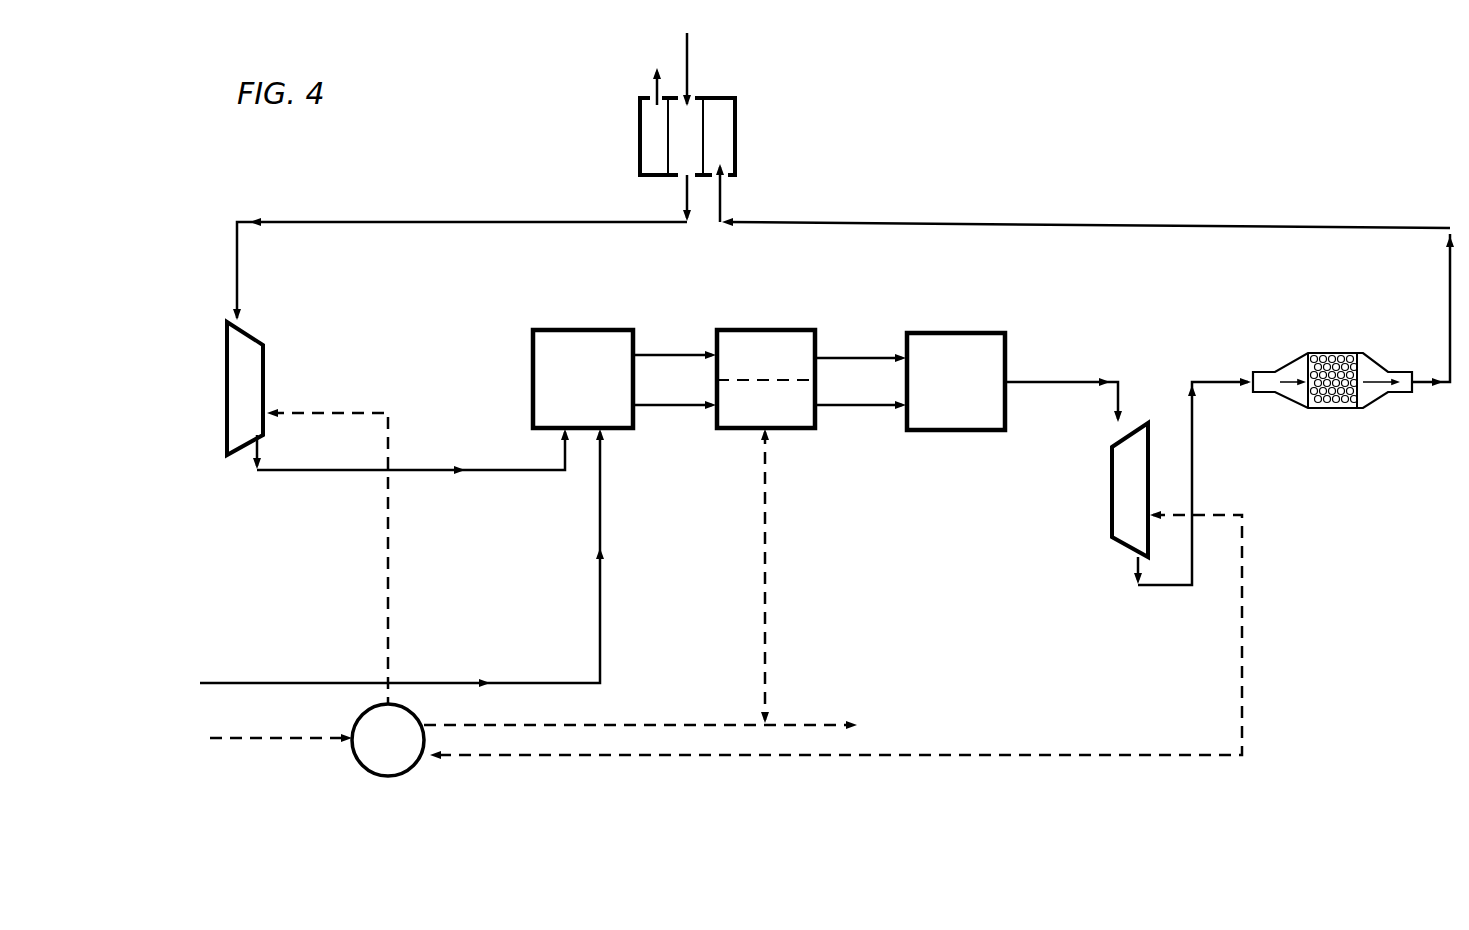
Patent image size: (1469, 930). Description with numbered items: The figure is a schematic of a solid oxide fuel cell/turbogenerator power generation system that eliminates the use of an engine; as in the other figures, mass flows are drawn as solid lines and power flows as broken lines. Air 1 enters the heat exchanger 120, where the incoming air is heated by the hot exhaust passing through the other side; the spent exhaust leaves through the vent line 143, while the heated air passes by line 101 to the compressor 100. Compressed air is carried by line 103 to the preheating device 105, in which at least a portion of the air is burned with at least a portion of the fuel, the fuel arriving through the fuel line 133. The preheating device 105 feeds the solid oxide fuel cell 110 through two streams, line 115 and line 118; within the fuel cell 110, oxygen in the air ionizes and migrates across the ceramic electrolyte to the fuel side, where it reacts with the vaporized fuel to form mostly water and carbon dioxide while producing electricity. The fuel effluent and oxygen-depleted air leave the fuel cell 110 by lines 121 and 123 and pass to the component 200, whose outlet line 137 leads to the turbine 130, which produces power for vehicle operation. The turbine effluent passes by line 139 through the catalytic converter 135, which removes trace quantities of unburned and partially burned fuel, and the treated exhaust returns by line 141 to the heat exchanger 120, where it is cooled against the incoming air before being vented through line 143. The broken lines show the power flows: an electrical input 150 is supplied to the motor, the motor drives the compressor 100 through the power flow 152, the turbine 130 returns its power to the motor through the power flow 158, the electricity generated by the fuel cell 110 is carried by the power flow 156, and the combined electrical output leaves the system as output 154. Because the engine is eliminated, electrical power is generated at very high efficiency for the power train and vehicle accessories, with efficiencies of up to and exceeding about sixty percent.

The air 1 is at (687, 43).
The compressor 100 is at (263, 373).
The compressor inlet line 101 is at (684, 207).
The compressed air line 103 is at (520, 470).
The preheating device 105 is at (583, 379).
The solid oxide fuel cell 110 is at (737, 432).
The second heat exchanger 115 is at (657, 355).
The air supply line 118 is at (675, 405).
The heat exchanger 120 is at (640, 130).
The anode exhaust line 121 is at (840, 356).
The cathode exhaust line 123 is at (845, 405).
The turbine 130 is at (1112, 493).
The fuel supply line 133 is at (600, 515).
The catalytic converter 135 is at (1330, 353).
The combustor exhaust line 137 is at (1045, 382).
The turbine exhaust line 139 is at (1192, 455).
The heat exchanger return line 141 is at (907, 223).
The exhaust outlet 143 is at (650, 84).
The electrical input line 150 is at (263, 738).
The motor-compressor coupling 152 is at (398, 622).
The electrical output line 154 is at (495, 722).
The fuel cell electrical connection 156 is at (767, 556).
The turbine-motor coupling 158 is at (1020, 752).
The combustor 200 is at (956, 381).